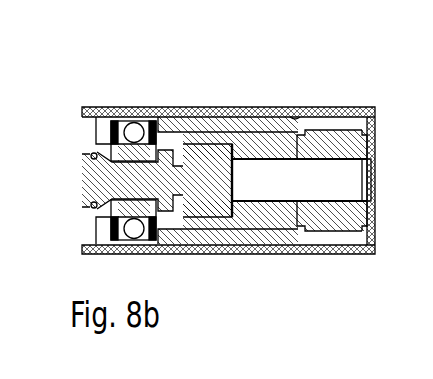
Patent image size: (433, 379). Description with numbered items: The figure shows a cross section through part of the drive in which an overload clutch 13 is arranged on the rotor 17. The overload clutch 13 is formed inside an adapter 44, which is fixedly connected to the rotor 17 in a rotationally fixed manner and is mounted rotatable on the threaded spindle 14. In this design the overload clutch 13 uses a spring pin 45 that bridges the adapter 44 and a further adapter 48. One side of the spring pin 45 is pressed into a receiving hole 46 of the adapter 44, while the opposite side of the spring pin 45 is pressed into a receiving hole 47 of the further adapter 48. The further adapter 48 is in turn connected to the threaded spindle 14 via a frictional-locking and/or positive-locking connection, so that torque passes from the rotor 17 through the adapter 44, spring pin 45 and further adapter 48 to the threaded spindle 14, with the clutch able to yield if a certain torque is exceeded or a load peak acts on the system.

The overload clutch 13 is at (292, 98).
The threaded spindle 14 is at (128, 180).
The rotor 17 is at (101, 118).
The adapter 44 is at (325, 140).
The spring pin 45 is at (277, 187).
The receiving hole 46 is at (335, 207).
The receiving hole 47 is at (229, 159).
The further adapter 48 is at (217, 212).